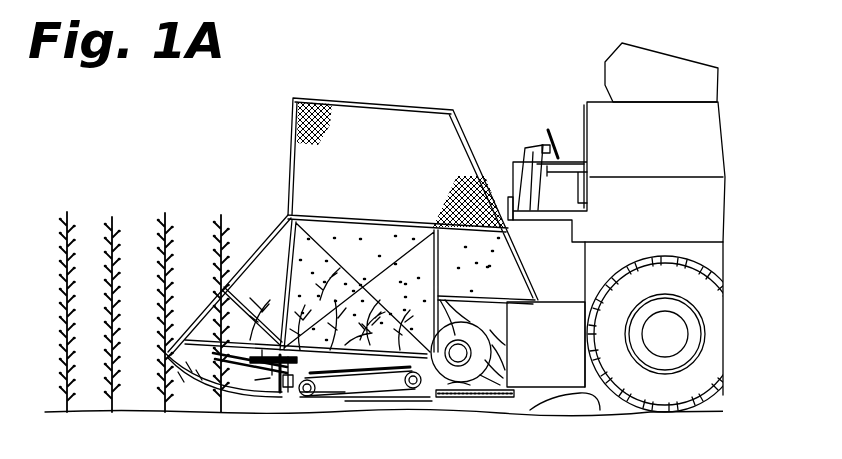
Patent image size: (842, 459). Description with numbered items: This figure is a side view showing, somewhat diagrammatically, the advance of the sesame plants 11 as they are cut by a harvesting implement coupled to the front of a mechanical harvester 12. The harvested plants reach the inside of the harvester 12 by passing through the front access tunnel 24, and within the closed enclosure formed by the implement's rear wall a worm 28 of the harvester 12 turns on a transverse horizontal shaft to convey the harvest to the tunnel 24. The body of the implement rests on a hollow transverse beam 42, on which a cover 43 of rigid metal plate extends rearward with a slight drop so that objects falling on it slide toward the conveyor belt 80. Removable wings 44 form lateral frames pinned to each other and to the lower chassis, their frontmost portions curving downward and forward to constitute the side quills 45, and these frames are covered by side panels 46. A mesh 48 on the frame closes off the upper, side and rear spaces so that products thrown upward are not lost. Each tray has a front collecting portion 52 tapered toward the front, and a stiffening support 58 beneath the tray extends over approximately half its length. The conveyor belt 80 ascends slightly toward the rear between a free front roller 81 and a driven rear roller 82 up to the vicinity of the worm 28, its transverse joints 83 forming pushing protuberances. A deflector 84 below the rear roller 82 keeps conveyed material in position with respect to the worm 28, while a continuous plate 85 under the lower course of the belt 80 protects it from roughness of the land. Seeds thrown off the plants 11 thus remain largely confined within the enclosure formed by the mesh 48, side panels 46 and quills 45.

The plants 11 is at (117, 217).
The mechanical harvester 12 is at (655, 153).
The front access tunnel 24 is at (562, 356).
The worm 28 is at (466, 325).
The hollow transverse beam 42 is at (282, 393).
The cover 43 is at (330, 352).
The removable wings 44 is at (262, 244).
The side quills 45 is at (190, 378).
The side panels 46 is at (358, 263).
The mesh 48 is at (370, 110).
The front collecting portion 52 is at (235, 337).
The stiffening support 58 is at (262, 382).
The conveyor belt 80 is at (362, 393).
The front roller 81 is at (304, 398).
The rear roller 82 is at (414, 390).
The joints 83 is at (390, 399).
The deflector 84 is at (447, 398).
The continuous plate 85 is at (424, 402).